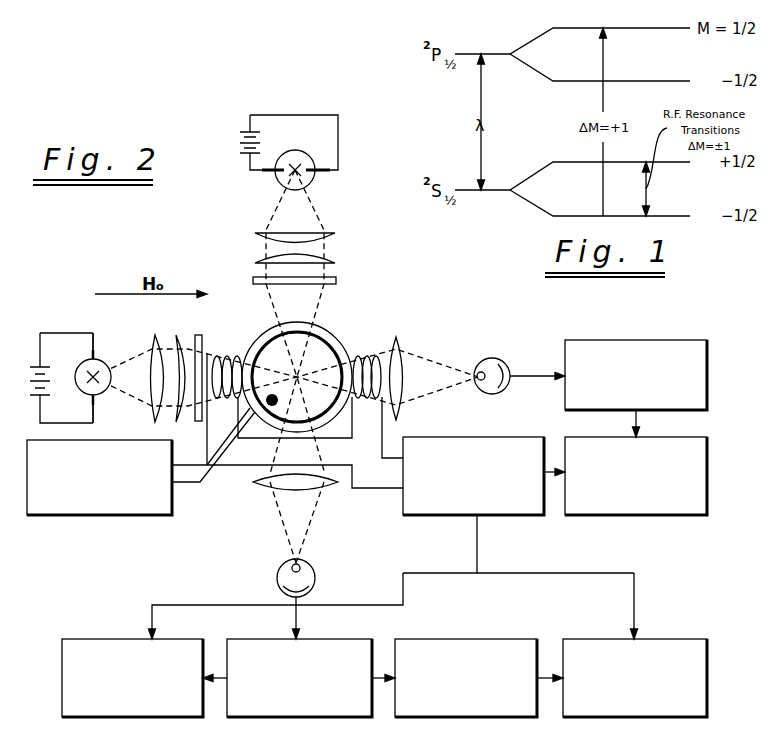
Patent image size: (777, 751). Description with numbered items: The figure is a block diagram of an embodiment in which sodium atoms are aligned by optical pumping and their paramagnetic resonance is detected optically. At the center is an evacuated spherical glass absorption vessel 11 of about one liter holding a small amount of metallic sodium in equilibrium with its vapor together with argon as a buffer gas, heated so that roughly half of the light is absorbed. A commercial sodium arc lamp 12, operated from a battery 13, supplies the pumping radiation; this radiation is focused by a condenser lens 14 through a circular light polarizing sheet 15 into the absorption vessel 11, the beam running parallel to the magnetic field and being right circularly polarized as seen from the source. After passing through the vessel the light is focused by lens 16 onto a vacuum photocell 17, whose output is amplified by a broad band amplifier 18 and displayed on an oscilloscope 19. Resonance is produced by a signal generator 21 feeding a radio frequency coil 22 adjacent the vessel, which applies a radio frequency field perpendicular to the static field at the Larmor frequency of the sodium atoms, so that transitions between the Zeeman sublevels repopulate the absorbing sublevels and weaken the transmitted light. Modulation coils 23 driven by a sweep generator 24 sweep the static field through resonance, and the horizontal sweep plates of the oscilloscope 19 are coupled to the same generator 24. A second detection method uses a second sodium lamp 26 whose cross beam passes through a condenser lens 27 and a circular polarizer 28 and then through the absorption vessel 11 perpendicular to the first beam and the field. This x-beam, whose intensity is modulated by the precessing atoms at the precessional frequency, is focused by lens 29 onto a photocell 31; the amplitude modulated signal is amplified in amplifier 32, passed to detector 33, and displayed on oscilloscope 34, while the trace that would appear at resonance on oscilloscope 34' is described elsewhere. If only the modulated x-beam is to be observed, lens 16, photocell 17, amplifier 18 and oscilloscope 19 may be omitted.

The absorption vessel 11 is at (323, 353).
The sodium arc lamp 12 is at (104, 360).
The battery 13 is at (30, 367).
The condenser lens 14 is at (183, 341).
The circular light polarizing sheet 15 is at (200, 336).
The lens 16 is at (401, 340).
The vacuum photocell 17 is at (488, 358).
The broad band amplifier 18 is at (583, 342).
The oscilloscope 19 is at (567, 503).
The signal generator 21 is at (158, 494).
The radio frequency coil 22 is at (329, 325).
The modulation coils 23 is at (222, 356).
The sweep generator 24 is at (482, 437).
The second sodium lamp 26 is at (276, 182).
The condenser lens 27 is at (262, 262).
The circular polarizer 28 is at (253, 281).
The lens 29 is at (270, 485).
The photocell 31 is at (315, 577).
The amplifier 32 is at (262, 648).
The detector 33 is at (468, 648).
The oscilloscope 34 is at (610, 662).
The oscilloscope 34' is at (132, 662).